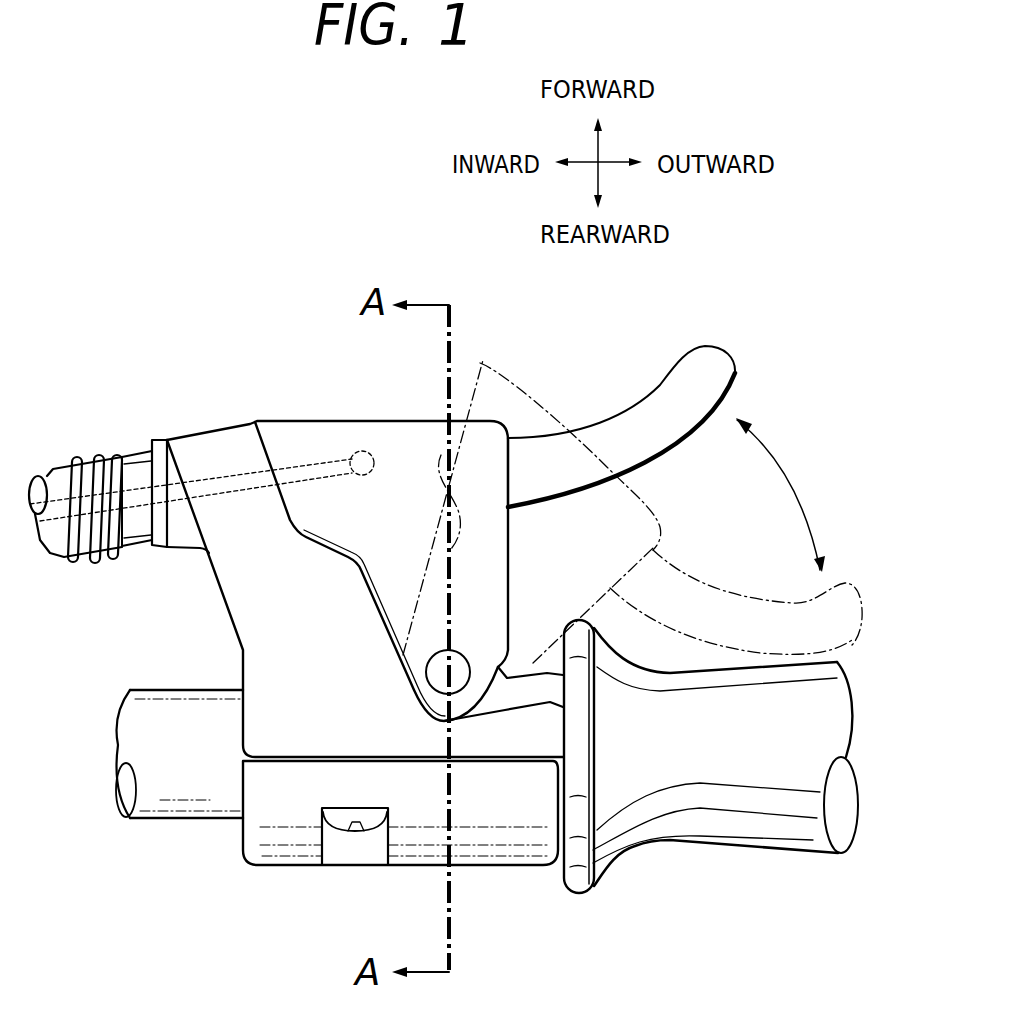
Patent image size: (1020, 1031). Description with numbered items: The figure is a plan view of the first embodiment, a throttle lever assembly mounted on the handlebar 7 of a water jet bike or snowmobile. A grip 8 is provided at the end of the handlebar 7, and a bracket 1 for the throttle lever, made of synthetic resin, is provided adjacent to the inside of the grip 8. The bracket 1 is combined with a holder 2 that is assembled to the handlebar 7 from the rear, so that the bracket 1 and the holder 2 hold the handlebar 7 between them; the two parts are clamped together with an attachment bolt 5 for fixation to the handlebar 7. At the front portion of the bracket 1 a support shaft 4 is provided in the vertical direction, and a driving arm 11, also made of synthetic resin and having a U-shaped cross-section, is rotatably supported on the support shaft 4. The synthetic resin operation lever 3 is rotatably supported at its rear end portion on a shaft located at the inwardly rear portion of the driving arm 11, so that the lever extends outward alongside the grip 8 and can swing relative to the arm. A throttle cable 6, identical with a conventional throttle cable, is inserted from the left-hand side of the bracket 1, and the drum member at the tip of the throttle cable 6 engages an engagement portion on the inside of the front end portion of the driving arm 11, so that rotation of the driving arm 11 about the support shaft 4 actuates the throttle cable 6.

The bracket 1 is at (270, 647).
The holder 2 is at (472, 817).
The operation lever 3 is at (613, 445).
The support shaft 4 is at (457, 676).
The attachment bolt 5 is at (343, 822).
The throttle cable 6 is at (210, 478).
The handlebar 7 is at (224, 785).
The grip 8 is at (703, 765).
The driving arm 11 is at (287, 437).